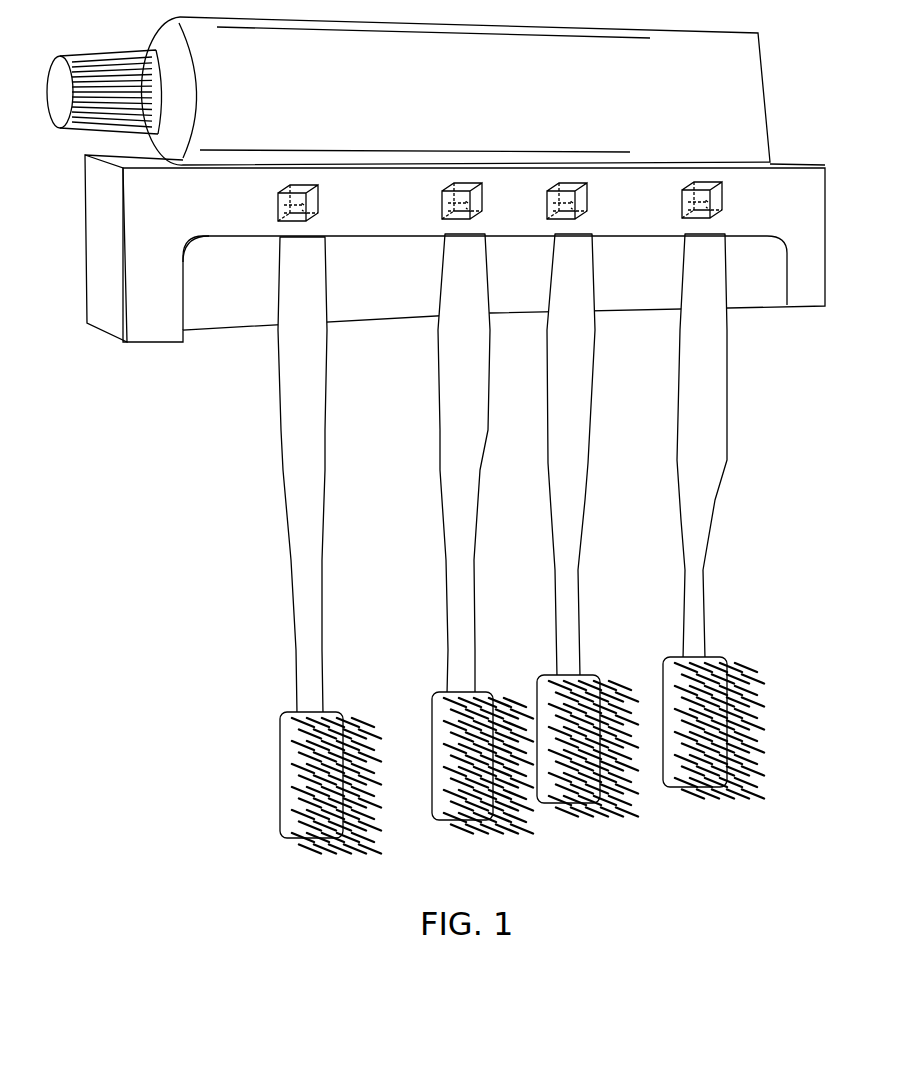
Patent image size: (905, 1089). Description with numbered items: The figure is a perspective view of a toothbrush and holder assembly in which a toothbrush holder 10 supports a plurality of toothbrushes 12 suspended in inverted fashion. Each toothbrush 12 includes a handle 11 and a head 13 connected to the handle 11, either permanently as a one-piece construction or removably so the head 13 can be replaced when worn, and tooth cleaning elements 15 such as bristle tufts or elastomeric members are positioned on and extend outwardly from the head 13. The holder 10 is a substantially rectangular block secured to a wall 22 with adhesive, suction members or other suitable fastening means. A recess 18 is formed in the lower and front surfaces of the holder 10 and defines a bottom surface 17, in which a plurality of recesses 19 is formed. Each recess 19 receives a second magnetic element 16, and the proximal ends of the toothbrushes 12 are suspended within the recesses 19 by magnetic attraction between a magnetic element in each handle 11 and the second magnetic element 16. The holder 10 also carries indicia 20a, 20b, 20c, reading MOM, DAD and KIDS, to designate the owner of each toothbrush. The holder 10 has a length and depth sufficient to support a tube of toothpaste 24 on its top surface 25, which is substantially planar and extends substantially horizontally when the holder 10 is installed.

The toothbrush holder 10 is at (160, 200).
The handle 11 is at (718, 388).
The toothbrush 12 is at (455, 628).
The head 13 is at (720, 660).
The tooth cleaning elements 15 is at (747, 752).
The second magnetic element 16 is at (442, 197).
The bottom surface 17 is at (355, 238).
The recess 18 is at (213, 253).
The recess 19 is at (722, 207).
The indicia 20a is at (255, 278).
The indicia 20b is at (420, 274).
The indicia 20c is at (620, 266).
The wall 22 is at (190, 515).
The tube of toothpaste 24 is at (480, 113).
The top surface 25 is at (785, 160).